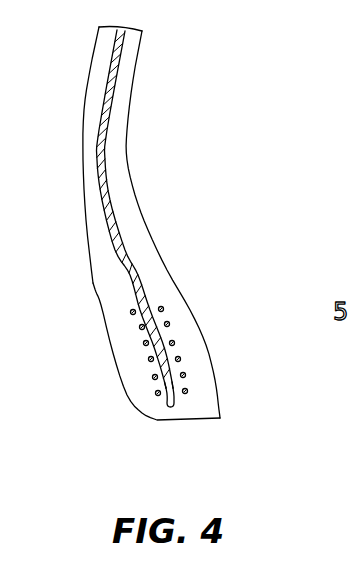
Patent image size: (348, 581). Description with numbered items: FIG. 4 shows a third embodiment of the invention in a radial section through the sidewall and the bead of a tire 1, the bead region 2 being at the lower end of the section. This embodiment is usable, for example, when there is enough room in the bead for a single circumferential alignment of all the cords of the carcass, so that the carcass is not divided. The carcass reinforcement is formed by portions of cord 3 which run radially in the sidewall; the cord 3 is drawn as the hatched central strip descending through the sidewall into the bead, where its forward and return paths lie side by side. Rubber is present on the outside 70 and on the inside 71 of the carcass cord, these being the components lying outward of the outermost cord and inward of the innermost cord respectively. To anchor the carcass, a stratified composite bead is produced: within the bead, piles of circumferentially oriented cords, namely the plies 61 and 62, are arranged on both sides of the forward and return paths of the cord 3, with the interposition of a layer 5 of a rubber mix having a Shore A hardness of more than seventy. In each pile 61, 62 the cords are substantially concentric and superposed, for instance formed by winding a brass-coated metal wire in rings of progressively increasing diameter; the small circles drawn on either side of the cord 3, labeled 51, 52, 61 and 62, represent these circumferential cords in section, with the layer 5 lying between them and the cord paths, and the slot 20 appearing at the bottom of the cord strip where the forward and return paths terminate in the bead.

The ski 1 is at (115, 230).
The ski tip 2 is at (122, 400).
The carcass cord 3 is at (107, 108).
The layer of rubber mix 5 is at (163, 402).
The slot 20 is at (170, 420).
The holes 51 is at (186, 375).
The holes 52 is at (152, 379).
The pile of circumferentially oriented cords 61 is at (173, 322).
The pile of circumferentially oriented cords 62 is at (137, 328).
The outside of the carcass cord 70 is at (96, 225).
The inside of the carcass cord 71 is at (132, 222).